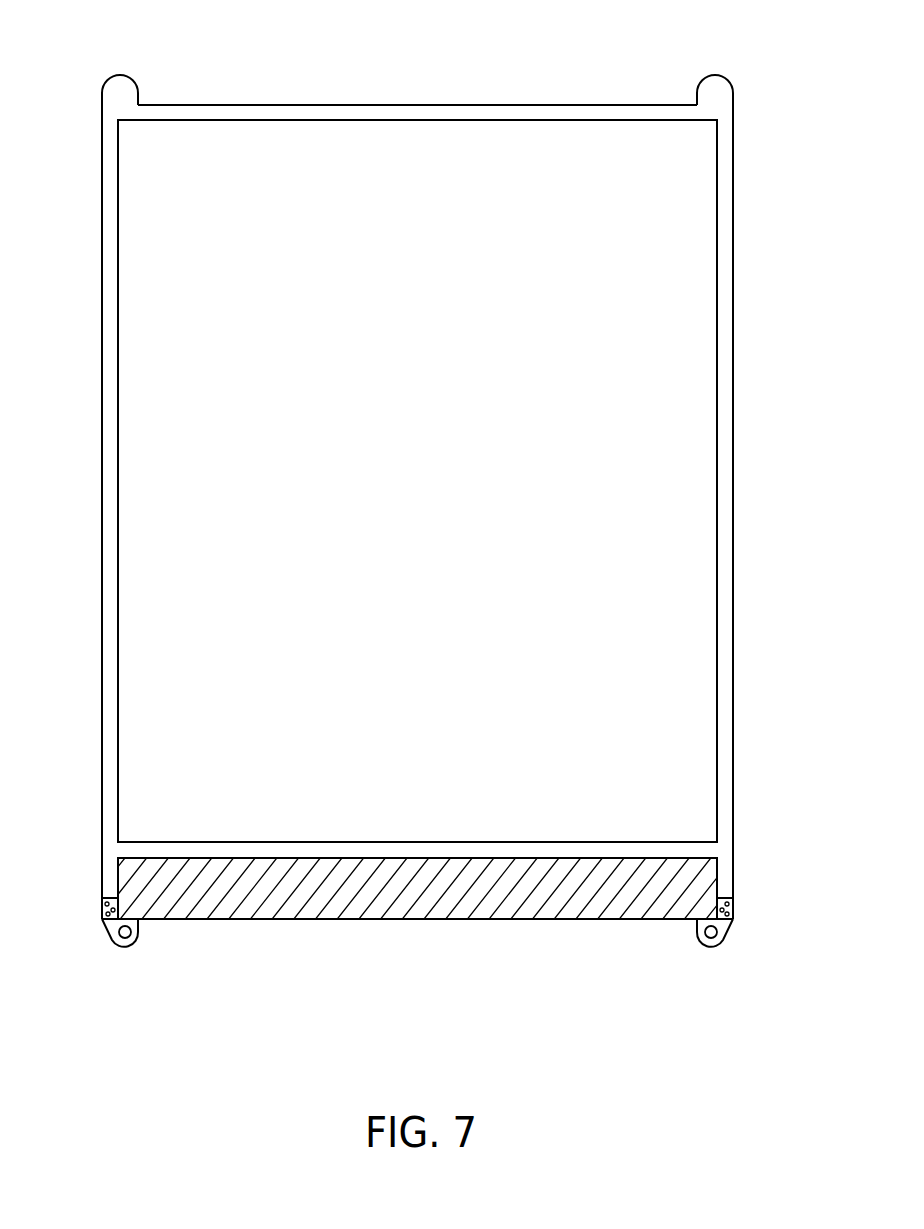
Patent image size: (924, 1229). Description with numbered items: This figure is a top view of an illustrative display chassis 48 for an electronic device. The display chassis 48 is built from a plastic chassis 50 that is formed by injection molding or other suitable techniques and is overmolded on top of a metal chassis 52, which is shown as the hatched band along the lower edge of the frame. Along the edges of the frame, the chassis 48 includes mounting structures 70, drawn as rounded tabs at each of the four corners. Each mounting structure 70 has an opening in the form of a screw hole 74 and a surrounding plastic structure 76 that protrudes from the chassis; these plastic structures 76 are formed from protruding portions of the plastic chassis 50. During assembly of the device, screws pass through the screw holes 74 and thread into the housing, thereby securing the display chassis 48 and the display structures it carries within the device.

The display chassis 48 is at (426, 514).
The plastic chassis 50 is at (111, 612).
The metal chassis 52 is at (473, 920).
The mounting structure 70 is at (162, 85).
The screw hole 74 is at (125, 90).
The plastic structure 76 is at (102, 96).